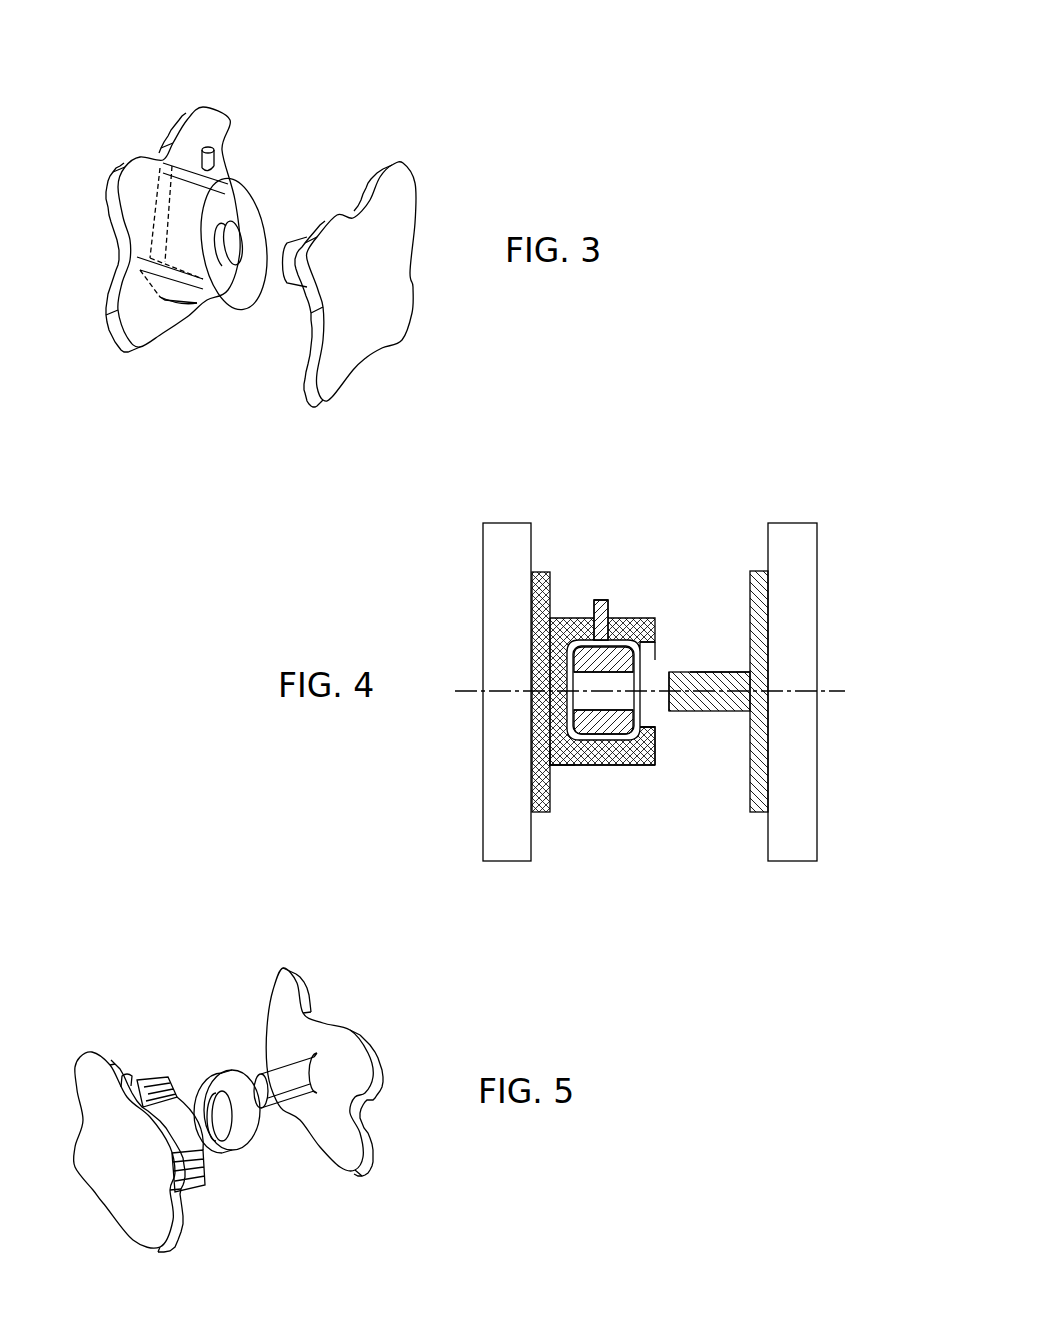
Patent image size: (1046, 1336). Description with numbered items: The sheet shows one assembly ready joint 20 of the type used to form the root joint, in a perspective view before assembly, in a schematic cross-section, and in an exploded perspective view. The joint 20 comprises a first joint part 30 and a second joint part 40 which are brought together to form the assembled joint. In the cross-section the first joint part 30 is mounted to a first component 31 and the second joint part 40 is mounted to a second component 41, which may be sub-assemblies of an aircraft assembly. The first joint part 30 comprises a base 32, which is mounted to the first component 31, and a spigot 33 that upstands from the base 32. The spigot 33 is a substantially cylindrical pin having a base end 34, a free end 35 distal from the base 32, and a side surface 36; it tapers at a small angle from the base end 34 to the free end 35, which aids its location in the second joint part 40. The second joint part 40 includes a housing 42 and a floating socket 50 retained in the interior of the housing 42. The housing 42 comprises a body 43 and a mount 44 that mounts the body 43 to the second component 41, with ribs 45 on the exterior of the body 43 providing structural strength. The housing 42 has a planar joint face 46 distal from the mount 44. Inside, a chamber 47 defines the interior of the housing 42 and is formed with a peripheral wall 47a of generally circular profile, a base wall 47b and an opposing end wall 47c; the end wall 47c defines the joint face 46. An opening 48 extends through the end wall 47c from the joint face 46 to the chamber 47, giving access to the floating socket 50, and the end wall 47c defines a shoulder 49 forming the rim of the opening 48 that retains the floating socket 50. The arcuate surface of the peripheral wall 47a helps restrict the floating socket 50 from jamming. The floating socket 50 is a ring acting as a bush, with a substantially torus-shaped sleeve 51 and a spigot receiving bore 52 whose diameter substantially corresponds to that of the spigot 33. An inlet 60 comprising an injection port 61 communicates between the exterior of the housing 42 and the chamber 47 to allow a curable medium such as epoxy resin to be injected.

In FIG. 3, the joint 20 is at (155, 435).
In FIG. 4, the joint 20 is at (820, 385).
In FIG. 3, the first joint part 30 is at (397, 100).
In FIG. 4, the first joint part 30 is at (785, 480).
In FIG. 5, the first joint part 30 is at (303, 945).
In FIG. 4, the first component 31 is at (803, 563).
In FIG. 3, the base 32 is at (395, 210).
In FIG. 4, the base 32 is at (768, 628).
In FIG. 5, the base 32 is at (362, 1113).
In FIG. 3, the spigot 33 is at (297, 250).
In FIG. 4, the spigot 33 is at (703, 673).
In FIG. 5, the spigot 33 is at (288, 1090).
In FIG. 4, the base end 34 is at (753, 700).
In FIG. 5, the base end 34 is at (293, 1067).
In FIG. 4, the free end 35 is at (683, 712).
In FIG. 5, the free end 35 is at (258, 1080).
In FIG. 5, the side surface 36 is at (300, 1057).
In FIG. 3, the second joint part 40 is at (203, 80).
In FIG. 4, the second joint part 40 is at (598, 480).
In FIG. 5, the second joint part 40 is at (90, 990).
In FIG. 4, the second component 41 is at (488, 552).
In FIG. 3, the housing 42 is at (187, 290).
In FIG. 4, the housing 42 is at (562, 767).
In FIG. 5, the housing 42 is at (188, 1157).
In FIG. 3, the body 43 is at (158, 360).
In FIG. 3, the mount 44 is at (140, 200).
In FIG. 4, the mount 44 is at (533, 793).
In FIG. 3, the ribs 45 is at (143, 267).
In FIG. 3, the joint face 46 is at (257, 197).
In FIG. 4, the chamber 47 is at (633, 617).
In FIG. 4, the peripheral wall 47a is at (592, 767).
In FIG. 4, the base wall 47b is at (530, 717).
In FIG. 4, the end wall 47c is at (645, 720).
In FIG. 3, the opening 48 is at (230, 260).
In FIG. 4, the opening 48 is at (655, 650).
In FIG. 4, the shoulder 49 is at (648, 673).
In FIG. 4, the floating socket 50 is at (607, 727).
In FIG. 5, the floating socket 50 is at (193, 960).
In FIG. 4, the sleeve 51 is at (580, 647).
In FIG. 5, the sleeve 51 is at (237, 1143).
In FIG. 4, the spigot receiving bore 52 is at (573, 680).
In FIG. 5, the spigot receiving bore 52 is at (203, 1093).
In FIG. 3, the inlet 60 is at (217, 167).
In FIG. 4, the inlet 60 is at (605, 610).
In FIG. 5, the inlet 60 is at (126, 1080).
In FIG. 3, the injection port 61 is at (210, 147).
In FIG. 4, the injection port 61 is at (597, 612).